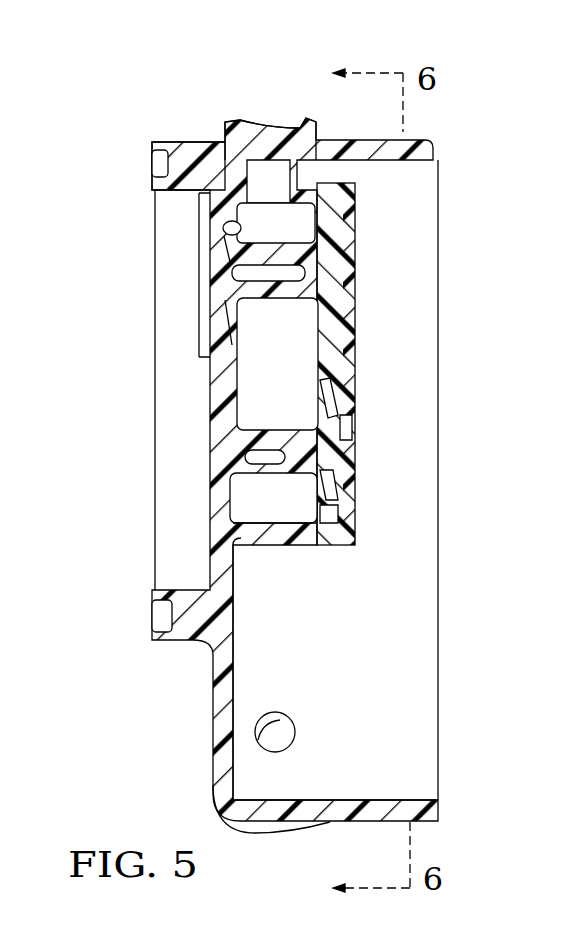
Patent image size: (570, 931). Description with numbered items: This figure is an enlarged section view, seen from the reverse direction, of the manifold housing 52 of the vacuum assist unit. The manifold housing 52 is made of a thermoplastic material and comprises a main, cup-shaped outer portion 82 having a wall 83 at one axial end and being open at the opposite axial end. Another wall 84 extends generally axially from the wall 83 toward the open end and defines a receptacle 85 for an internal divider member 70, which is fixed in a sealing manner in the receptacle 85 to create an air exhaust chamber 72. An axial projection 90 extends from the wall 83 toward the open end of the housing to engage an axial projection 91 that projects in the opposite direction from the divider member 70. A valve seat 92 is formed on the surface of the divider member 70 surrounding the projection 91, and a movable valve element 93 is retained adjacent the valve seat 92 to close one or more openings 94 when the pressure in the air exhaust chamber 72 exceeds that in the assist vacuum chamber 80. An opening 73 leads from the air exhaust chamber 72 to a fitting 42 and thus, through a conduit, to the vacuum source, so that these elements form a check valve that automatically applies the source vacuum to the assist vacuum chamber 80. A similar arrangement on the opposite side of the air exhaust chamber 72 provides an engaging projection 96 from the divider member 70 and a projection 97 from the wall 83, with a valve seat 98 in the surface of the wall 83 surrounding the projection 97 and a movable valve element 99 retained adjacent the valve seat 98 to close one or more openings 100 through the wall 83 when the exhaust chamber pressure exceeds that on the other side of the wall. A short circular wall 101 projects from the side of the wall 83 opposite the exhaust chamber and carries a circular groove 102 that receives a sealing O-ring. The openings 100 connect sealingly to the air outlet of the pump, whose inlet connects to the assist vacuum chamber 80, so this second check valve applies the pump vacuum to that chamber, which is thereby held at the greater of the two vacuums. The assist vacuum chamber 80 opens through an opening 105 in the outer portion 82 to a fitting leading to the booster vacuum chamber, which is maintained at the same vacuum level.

The fitting 42 is at (230, 122).
The manifold housing 52 is at (431, 140).
The internal divider member 70 is at (343, 270).
The air exhaust chamber 72 is at (300, 332).
The opening 73 is at (287, 184).
The assist vacuum chamber 80 is at (405, 582).
The outer portion 82 is at (400, 805).
The wall 83 is at (218, 700).
The wall 84 is at (267, 540).
The receptacle 85 is at (333, 517).
The axial projection 90 is at (273, 475).
The axial projection 91 is at (272, 452).
The valve seat 92 is at (333, 480).
The movable valve element 93 is at (322, 388).
The openings 94 is at (353, 423).
The projection 96 is at (280, 258).
The projection 97 is at (228, 321).
The valve seat 98 is at (226, 240).
The movable valve element 99 is at (225, 243).
The openings 100 is at (217, 302).
The short circular wall 101 is at (183, 155).
The circular groove 102 is at (156, 162).
The opening 105 is at (270, 724).